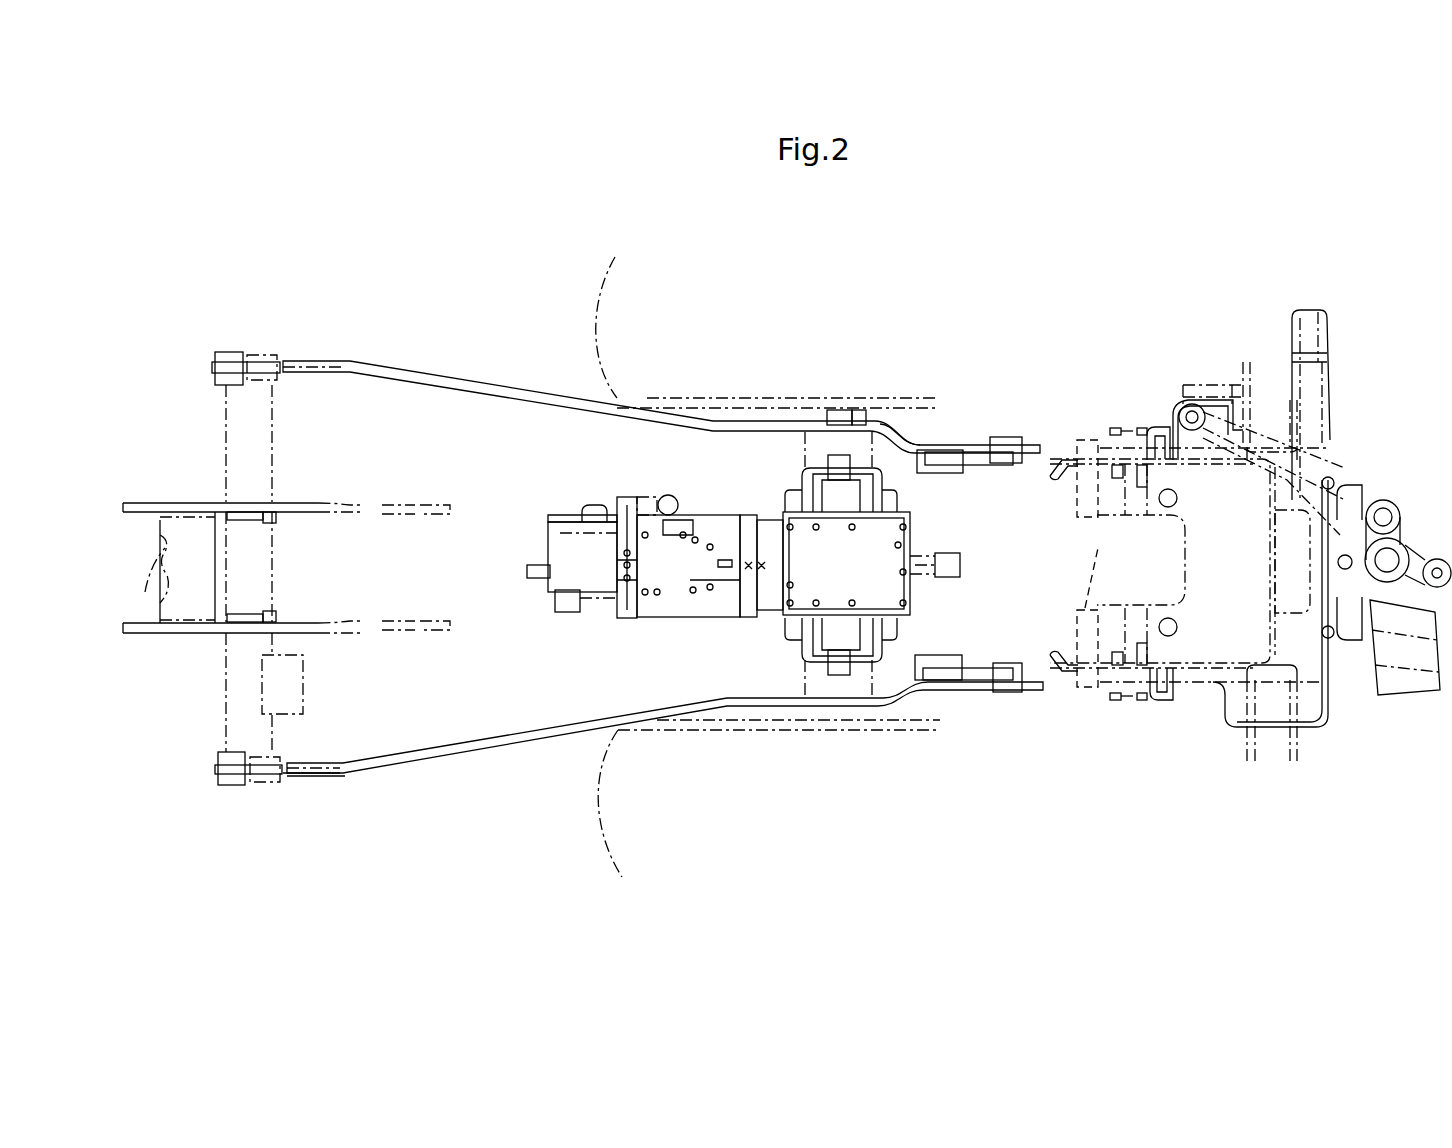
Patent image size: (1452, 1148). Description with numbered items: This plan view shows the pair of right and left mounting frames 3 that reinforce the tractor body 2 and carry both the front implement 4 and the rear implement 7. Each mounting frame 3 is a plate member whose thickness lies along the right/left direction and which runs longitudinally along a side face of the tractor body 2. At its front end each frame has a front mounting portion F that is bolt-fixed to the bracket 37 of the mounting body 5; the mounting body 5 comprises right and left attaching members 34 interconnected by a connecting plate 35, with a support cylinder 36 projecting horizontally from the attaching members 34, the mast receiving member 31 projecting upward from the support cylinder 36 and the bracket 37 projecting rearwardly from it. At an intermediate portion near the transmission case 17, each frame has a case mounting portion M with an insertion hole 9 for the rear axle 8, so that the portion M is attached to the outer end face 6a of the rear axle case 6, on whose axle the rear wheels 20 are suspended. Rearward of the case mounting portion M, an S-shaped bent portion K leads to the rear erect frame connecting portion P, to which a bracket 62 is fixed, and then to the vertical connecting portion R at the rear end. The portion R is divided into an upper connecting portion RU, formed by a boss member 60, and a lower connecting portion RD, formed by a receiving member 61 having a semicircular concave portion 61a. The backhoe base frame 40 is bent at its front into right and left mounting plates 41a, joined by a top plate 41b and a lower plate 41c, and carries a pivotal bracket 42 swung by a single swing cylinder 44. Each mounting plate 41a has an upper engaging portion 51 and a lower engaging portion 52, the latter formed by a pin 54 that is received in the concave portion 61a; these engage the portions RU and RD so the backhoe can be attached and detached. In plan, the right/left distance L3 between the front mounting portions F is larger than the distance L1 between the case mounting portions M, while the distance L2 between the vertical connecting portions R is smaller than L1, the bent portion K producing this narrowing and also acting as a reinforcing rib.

The tractor body 2 is at (560, 496).
The mounting frame 3 is at (465, 382).
The front implement 4 is at (232, 348).
The mounting body 5 is at (254, 351).
The rear axle case 6 is at (810, 462).
The outer end face 6a is at (870, 430).
The rear implement 7 is at (1163, 370).
The rear axle 8 is at (835, 410).
The insertion hole 9 is at (855, 420).
The transmission case 17 is at (610, 622).
The rear wheel 20 is at (600, 778).
The mast receiving member 31 is at (237, 787).
The attaching member 34 is at (192, 636).
The connecting plate 35 is at (145, 592).
The support cylinder 36 is at (266, 522).
The bracket 37 is at (330, 777).
The base frame 40 is at (1328, 723).
The mounting plate 41a is at (1068, 674).
The top plate 41b is at (1160, 692).
The lower plate 41c is at (1220, 683).
The pivotal bracket 42 is at (1413, 692).
The swing cylinder 44 is at (1247, 487).
The upper engaging portion 51 is at (1121, 418).
The lower engaging portion 52 is at (1080, 437).
The pin 54 is at (1092, 552).
The boss member 60 is at (1005, 663).
The receiving member 61 is at (990, 452).
The semicircular concave portion 61a is at (962, 455).
The bracket 62 is at (940, 660).
The right/left distance between case mounting portions L1 is at (740, 697).
The right/left distance between vertical connecting portions L2 is at (1033, 453).
The right/left distance between front mounting portions L3 is at (316, 374).
The front mounting portion F is at (299, 777).
The case mounting portion M is at (840, 708).
The bent portion K is at (903, 703).
The rear erect frame connecting portion P is at (940, 688).
The vertical connecting portion R is at (980, 690).
The lower connecting portion RD is at (971, 467).
The upper connecting portion RU is at (1010, 468).